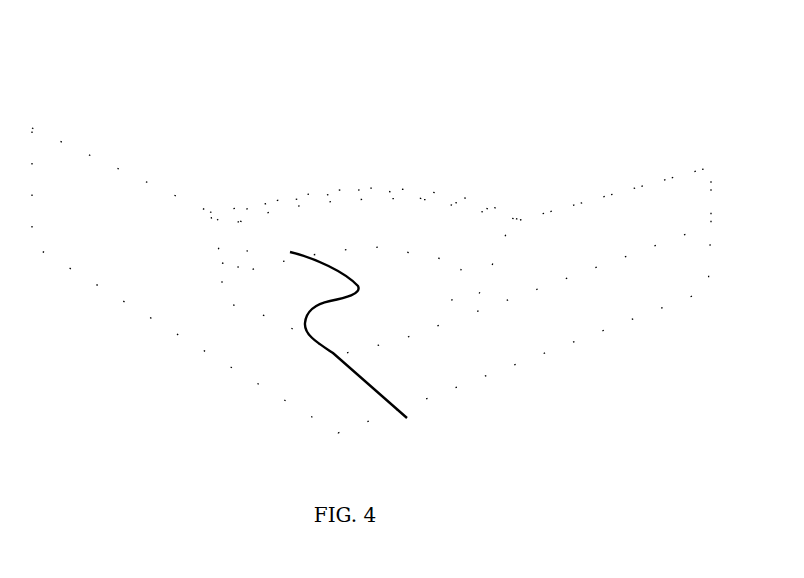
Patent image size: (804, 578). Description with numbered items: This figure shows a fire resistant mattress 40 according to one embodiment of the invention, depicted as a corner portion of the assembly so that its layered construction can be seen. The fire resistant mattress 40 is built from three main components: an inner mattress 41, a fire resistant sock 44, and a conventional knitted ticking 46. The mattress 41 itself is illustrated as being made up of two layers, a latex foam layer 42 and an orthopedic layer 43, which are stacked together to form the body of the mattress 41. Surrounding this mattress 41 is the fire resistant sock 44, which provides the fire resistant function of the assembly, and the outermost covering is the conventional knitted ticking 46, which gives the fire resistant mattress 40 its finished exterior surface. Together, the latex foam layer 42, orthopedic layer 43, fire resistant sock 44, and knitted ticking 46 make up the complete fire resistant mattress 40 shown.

The fire resistant mattress 40 is at (187, 70).
The mattress 41 is at (407, 418).
The latex foam layer 42 is at (296, 233).
The orthopedic layer 43 is at (383, 277).
The fire resistant sock 44 is at (222, 258).
The conventional knitted ticking 46 is at (538, 160).